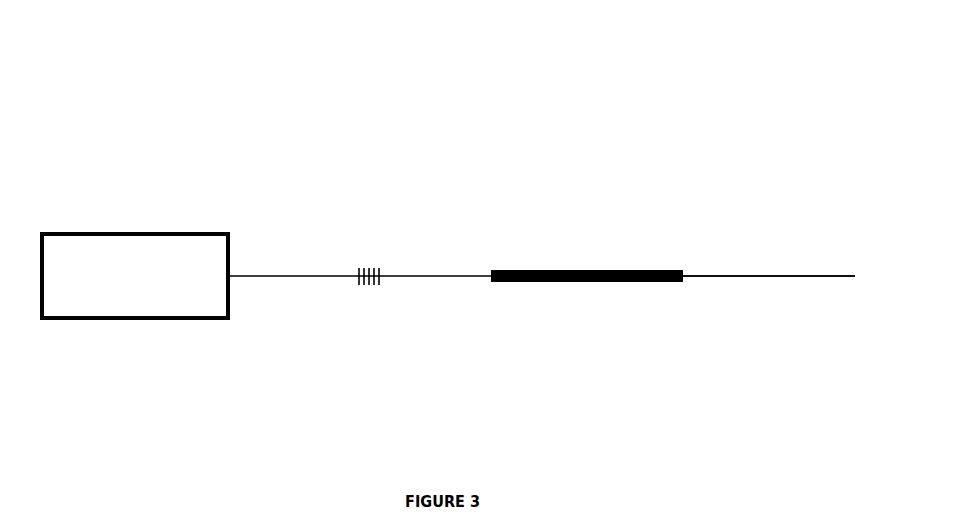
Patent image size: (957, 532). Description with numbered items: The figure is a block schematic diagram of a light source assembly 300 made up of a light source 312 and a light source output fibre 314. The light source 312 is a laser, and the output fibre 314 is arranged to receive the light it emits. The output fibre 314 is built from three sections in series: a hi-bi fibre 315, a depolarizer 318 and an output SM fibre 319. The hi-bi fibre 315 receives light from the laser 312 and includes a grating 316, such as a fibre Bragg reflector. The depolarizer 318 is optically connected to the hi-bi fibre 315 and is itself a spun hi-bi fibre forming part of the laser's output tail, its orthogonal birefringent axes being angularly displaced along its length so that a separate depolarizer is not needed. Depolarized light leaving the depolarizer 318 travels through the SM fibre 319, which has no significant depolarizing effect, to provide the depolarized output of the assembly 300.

The light source assembly 300 is at (312, 76).
The light source 312 is at (93, 323).
The light source output fibre 314 is at (593, 211).
The hi-bi fibre 315 is at (305, 280).
The grating 316 is at (370, 262).
The depolarizer 318 is at (542, 283).
The output SM fibre 319 is at (750, 280).